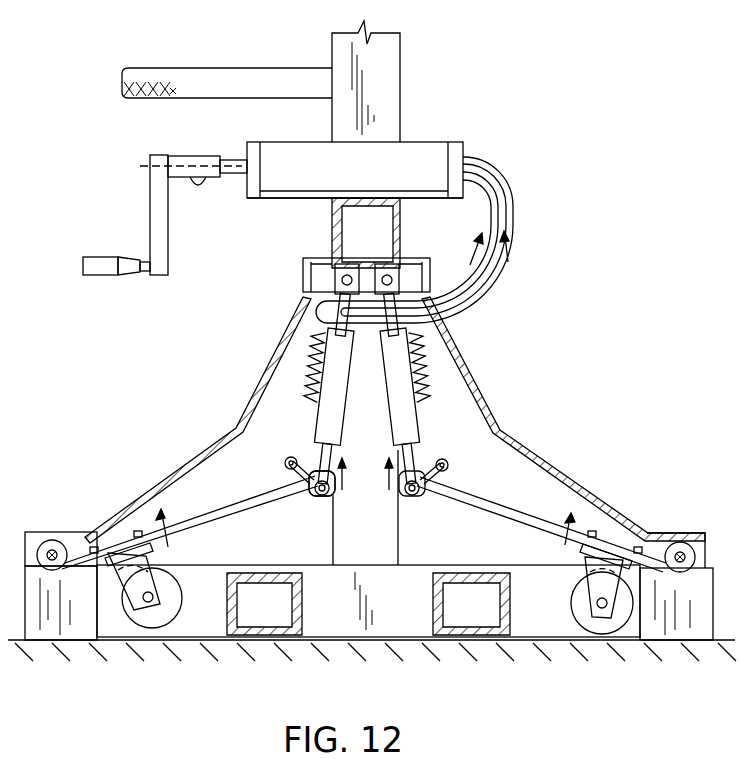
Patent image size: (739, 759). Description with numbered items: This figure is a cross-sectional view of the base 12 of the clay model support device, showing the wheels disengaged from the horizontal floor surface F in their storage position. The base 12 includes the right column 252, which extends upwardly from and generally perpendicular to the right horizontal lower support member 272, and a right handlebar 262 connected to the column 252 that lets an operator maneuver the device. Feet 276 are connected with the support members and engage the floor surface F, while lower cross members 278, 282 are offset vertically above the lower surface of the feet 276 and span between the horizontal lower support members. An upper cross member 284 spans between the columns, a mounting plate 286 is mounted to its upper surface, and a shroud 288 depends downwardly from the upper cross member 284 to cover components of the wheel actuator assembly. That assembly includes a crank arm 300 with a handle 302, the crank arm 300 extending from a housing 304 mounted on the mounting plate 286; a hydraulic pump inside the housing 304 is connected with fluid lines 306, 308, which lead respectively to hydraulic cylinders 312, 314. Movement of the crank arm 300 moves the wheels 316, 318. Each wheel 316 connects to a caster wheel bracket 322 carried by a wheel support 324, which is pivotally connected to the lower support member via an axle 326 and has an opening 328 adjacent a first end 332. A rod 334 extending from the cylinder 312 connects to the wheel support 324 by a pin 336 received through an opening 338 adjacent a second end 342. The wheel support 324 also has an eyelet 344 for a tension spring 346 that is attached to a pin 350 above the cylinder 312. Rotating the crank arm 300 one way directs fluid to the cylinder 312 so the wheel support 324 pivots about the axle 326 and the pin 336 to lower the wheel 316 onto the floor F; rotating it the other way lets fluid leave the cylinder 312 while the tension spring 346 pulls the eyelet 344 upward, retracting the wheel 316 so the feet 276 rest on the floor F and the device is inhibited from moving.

The base 12 is at (520, 328).
The second (right) column 252 is at (345, 540).
The second (right) handlebar 262 is at (255, 76).
The right horizontal lower support member 272 is at (207, 613).
The feet 276 is at (78, 625).
The lower cross member 278 is at (303, 617).
The lower cross member 282 is at (512, 618).
The upper cross member 284 is at (335, 228).
The mounting plate 286 is at (262, 197).
The shroud 288 is at (268, 372).
The crank arm 300 is at (160, 231).
The handle 302 is at (103, 266).
The housing 304 is at (418, 140).
The fluid line 306 is at (505, 176).
The fluid line 308 is at (495, 212).
The hydraulic cylinder 312 is at (255, 388).
The hydraulic cylinder 314 is at (402, 425).
The wheel 316 is at (142, 635).
The wheel 318 is at (604, 634).
The caster wheel bracket 322 is at (140, 614).
The wheel support 324 is at (208, 515).
The axle 326 is at (50, 548).
The opening 328 is at (70, 548).
The first end 332 is at (46, 568).
The rod 334 is at (325, 418).
The pin 336 is at (325, 493).
The opening 338 is at (316, 491).
The second end 342 is at (330, 494).
The eyelet 344 is at (284, 465).
The tension spring 346 is at (316, 350).
The pin 350 is at (340, 279).
The horizontal floor surface F is at (403, 638).